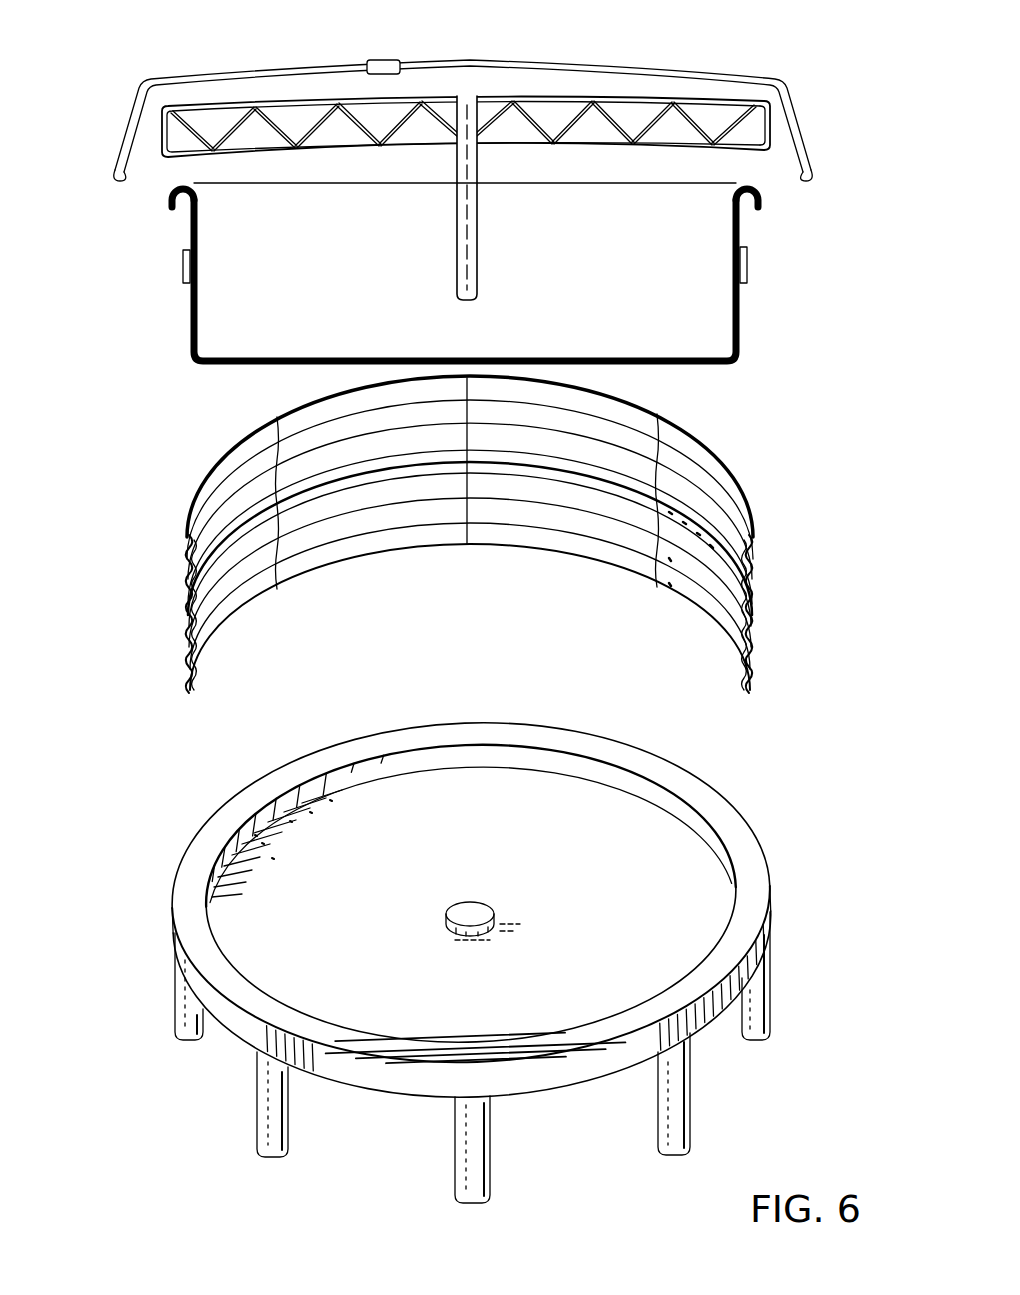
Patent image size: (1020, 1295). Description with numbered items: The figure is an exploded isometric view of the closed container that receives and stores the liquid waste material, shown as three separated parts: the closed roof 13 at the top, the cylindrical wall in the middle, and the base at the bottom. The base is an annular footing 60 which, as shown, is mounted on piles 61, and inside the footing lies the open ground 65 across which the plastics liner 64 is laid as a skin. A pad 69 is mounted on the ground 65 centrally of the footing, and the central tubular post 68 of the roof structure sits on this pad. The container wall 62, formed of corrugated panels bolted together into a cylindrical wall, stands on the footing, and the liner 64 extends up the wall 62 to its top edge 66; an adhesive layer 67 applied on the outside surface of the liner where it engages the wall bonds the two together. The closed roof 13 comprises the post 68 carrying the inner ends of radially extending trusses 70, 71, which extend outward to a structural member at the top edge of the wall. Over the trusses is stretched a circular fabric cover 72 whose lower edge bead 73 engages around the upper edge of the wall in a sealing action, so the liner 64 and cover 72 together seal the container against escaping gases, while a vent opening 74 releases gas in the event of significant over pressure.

The closed roof 13 is at (766, 60).
The circular fabric cover 72 is at (245, 68).
The vent opening 74 is at (385, 60).
The lower edge bead 73 is at (112, 171).
The radially extending truss 71 is at (167, 162).
The radially extending truss 70 is at (768, 157).
The central tubular post 68 is at (478, 247).
The liner 64 is at (504, 272).
The adhesive layer 67 is at (808, 592).
The top edge 66 is at (714, 452).
The container wall 62 is at (707, 600).
The annular footing 60 is at (746, 825).
The open ground 65 is at (240, 864).
The piles 61 is at (262, 1101).
The pad 69 is at (480, 909).